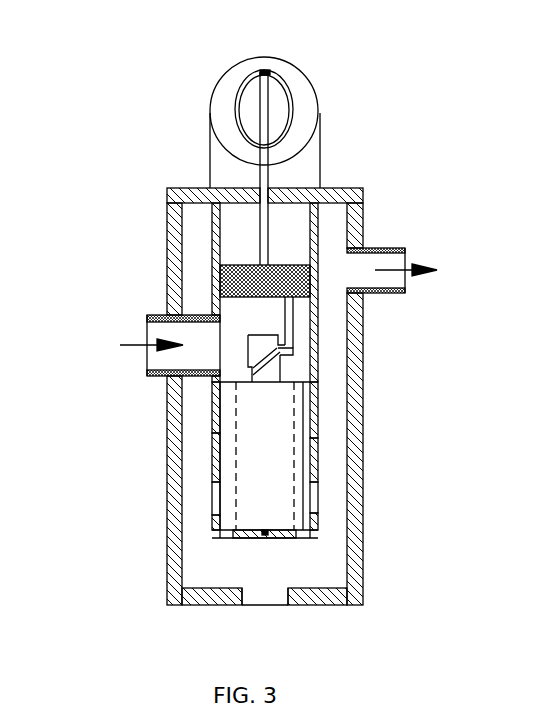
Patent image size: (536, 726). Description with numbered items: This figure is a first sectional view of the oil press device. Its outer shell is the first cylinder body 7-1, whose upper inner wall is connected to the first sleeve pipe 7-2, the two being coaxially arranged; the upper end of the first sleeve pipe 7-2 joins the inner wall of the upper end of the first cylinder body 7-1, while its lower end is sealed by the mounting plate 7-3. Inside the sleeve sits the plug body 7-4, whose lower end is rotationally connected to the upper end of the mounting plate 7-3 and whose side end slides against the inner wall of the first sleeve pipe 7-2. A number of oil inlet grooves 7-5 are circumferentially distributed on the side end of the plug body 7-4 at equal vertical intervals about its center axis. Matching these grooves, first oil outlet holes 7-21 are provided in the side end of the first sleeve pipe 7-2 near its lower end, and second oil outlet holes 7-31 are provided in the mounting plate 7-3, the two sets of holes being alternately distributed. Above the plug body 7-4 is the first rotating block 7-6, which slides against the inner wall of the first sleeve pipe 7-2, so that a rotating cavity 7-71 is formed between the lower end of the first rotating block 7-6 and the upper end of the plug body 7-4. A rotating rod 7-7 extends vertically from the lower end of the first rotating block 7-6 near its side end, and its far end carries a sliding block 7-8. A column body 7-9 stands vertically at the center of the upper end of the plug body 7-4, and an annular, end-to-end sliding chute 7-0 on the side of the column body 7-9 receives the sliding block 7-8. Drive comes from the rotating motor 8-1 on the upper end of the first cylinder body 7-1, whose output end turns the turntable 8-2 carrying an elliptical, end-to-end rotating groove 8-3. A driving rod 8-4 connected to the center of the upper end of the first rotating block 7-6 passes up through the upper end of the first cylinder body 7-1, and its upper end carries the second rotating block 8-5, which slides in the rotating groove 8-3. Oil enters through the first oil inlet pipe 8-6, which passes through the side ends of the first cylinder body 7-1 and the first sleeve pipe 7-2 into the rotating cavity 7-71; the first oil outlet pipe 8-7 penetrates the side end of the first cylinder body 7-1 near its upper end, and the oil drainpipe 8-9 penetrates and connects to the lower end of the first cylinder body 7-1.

The first cylinder body 7-1 is at (172, 187).
The first sleeve pipe 7-2 is at (217, 240).
The first oil outlet holes 7-21 is at (218, 418).
The mounting plate 7-3 is at (252, 537).
The second oil outlet holes 7-31 is at (228, 533).
The plug body 7-4 is at (263, 463).
The oil inlet grooves 7-5 is at (235, 432).
The first rotating block 7-6 is at (293, 263).
The rotating rod 7-7 is at (295, 325).
The rotating cavity 7-71 is at (235, 323).
The sliding block 7-8 is at (280, 352).
The sliding chute 7-0 is at (268, 357).
The column body 7-9 is at (270, 370).
The rotating motor 8-1 is at (207, 127).
The turntable 8-2 is at (303, 103).
The rotating groove 8-3 is at (281, 82).
The driving rod 8-4 is at (270, 178).
The second rotating block 8-5 is at (260, 72).
The first oil inlet pipe 8-6 is at (183, 345).
The first oil outlet pipe 8-7 is at (370, 265).
The oil drainpipe 8-9 is at (262, 597).